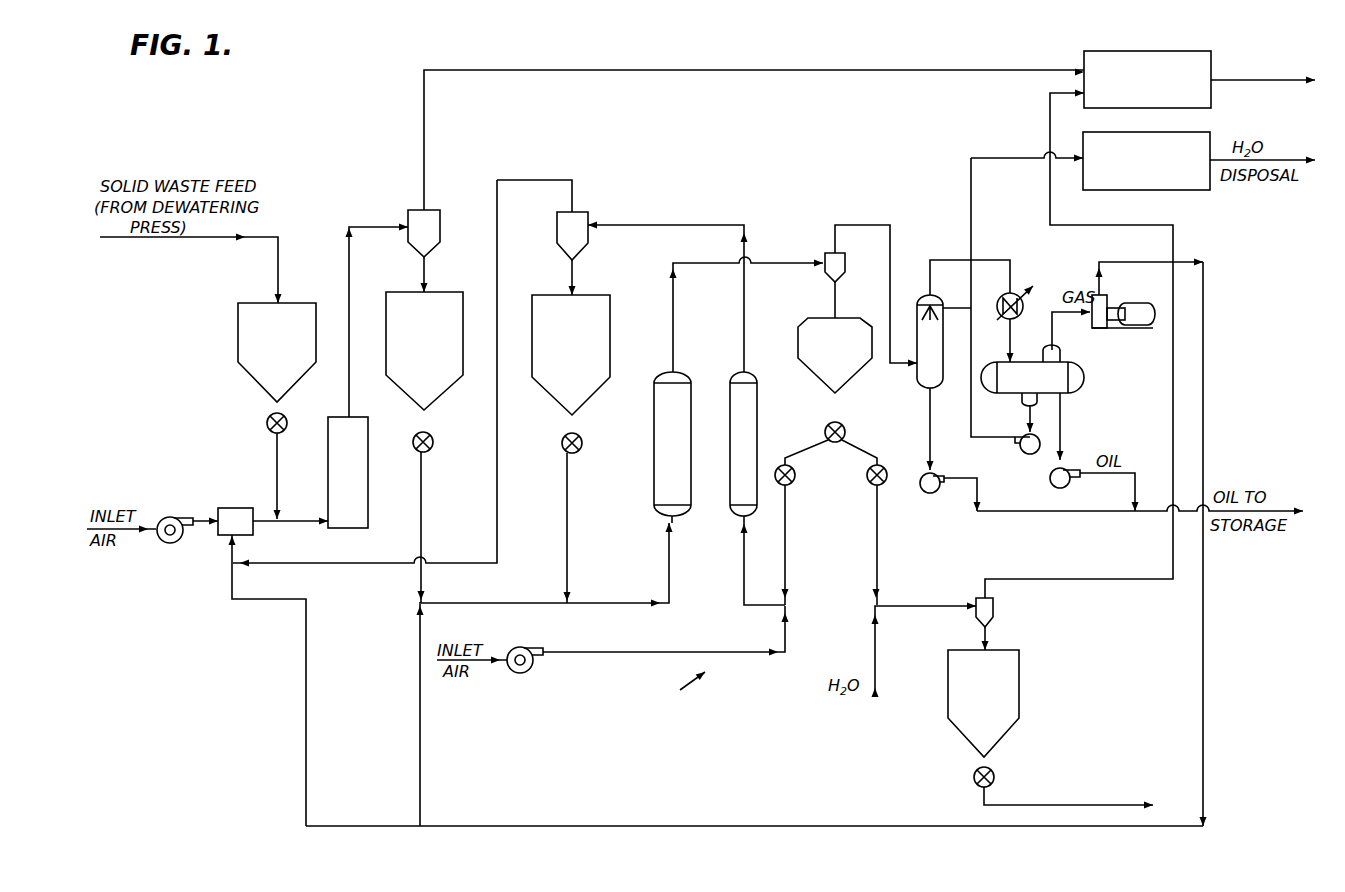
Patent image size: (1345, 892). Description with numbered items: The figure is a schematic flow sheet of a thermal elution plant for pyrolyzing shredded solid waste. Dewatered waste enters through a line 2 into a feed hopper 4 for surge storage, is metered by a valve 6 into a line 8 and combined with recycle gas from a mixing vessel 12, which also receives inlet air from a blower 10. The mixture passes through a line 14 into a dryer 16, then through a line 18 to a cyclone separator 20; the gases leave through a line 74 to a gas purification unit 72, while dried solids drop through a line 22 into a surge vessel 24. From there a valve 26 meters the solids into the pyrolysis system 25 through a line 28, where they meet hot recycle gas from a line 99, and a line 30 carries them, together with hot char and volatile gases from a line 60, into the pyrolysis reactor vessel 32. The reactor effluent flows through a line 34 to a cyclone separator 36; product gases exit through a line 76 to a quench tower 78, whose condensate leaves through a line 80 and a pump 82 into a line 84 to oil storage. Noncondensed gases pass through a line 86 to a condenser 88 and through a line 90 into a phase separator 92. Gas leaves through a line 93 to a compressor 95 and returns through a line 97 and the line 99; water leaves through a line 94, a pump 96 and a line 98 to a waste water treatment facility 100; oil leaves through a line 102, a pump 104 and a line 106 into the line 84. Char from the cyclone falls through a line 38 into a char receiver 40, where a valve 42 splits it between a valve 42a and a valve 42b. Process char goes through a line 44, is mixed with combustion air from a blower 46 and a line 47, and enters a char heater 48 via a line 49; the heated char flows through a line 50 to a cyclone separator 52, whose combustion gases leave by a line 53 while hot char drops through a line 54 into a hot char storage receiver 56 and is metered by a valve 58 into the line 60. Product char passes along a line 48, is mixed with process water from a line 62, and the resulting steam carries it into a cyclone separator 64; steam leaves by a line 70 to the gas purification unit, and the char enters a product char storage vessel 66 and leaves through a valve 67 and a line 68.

The line 2 is at (279, 271).
The feed hopper 4 is at (238, 345).
The valve 6 is at (267, 425).
The line 8 is at (277, 458).
The inlet air blower 10 is at (178, 516).
The mixing vessel 12 is at (250, 509).
The line 14 is at (305, 524).
The dryer 16 is at (368, 481).
The line 18 is at (351, 253).
The cyclone separator 20 is at (408, 218).
The line 22 is at (425, 268).
The surge vessel 24 is at (463, 353).
The pyrolysis system 25 is at (681, 685).
The valve 26 is at (434, 442).
The line 28 is at (422, 485).
The line 30 is at (508, 604).
The pyrolysis reactor vessel 32 is at (654, 508).
The line 34 is at (712, 265).
The cyclone separator 36 is at (825, 257).
The line 38 is at (835, 293).
The char receiver 40 is at (828, 380).
The valve 42 is at (851, 417).
The valve 42a is at (783, 466).
The valve 42b is at (867, 476).
The line 44 is at (786, 521).
The blower 46 is at (533, 668).
The line 47 is at (625, 652).
The char heater 48 is at (733, 512).
The line 49 is at (742, 583).
The line 50 is at (744, 335).
The cyclone separator 52 is at (589, 220).
The line 53 is at (528, 180).
The line 54 is at (574, 275).
The hot char storage receiver 56 is at (610, 322).
The valve 58 is at (583, 443).
The line 60 is at (568, 501).
The line 62 is at (876, 656).
The cyclone separator 64 is at (993, 608).
The product char storage vessel 66 is at (1019, 673).
The valve 67 is at (974, 777).
The line 68 is at (1050, 805).
The line 70 is at (1100, 580).
The gas purification unit 72 is at (1084, 57).
The line 74 is at (660, 72).
The line 76 is at (890, 238).
The quench tower 78 is at (917, 385).
The line 80 is at (930, 430).
The pump 82 is at (930, 493).
The line 84 is at (1038, 512).
The line 86 is at (1005, 260).
The condenser 88 is at (1020, 292).
The line 90 is at (1010, 325).
The phase separator 92 is at (1025, 362).
The line 93 is at (1065, 313).
The line 94 is at (1027, 413).
The compressor 95 is at (1136, 302).
The pump 96 is at (1019, 454).
The line 97 is at (1143, 262).
The line 98 is at (966, 425).
The line 99 is at (421, 728).
The waste water treatment facility 100 is at (1190, 190).
The line 102 is at (1063, 434).
The pump 104 is at (1067, 486).
The line 106 is at (1140, 471).